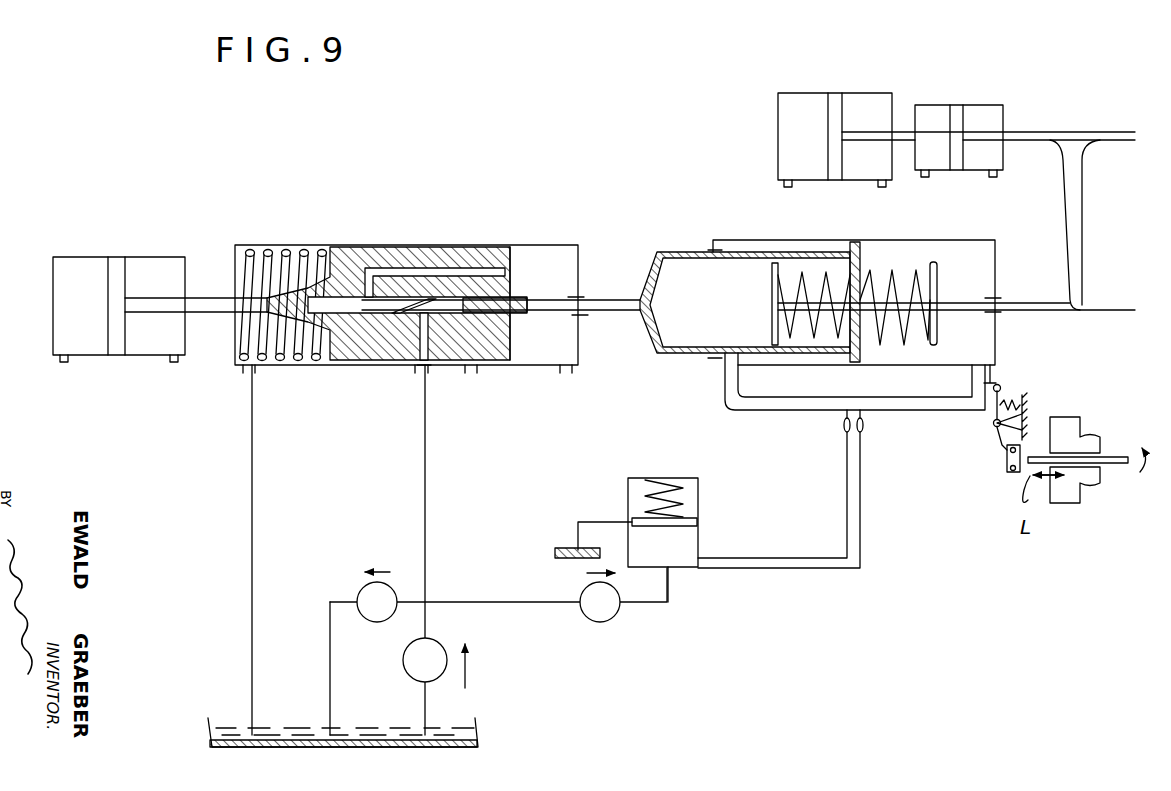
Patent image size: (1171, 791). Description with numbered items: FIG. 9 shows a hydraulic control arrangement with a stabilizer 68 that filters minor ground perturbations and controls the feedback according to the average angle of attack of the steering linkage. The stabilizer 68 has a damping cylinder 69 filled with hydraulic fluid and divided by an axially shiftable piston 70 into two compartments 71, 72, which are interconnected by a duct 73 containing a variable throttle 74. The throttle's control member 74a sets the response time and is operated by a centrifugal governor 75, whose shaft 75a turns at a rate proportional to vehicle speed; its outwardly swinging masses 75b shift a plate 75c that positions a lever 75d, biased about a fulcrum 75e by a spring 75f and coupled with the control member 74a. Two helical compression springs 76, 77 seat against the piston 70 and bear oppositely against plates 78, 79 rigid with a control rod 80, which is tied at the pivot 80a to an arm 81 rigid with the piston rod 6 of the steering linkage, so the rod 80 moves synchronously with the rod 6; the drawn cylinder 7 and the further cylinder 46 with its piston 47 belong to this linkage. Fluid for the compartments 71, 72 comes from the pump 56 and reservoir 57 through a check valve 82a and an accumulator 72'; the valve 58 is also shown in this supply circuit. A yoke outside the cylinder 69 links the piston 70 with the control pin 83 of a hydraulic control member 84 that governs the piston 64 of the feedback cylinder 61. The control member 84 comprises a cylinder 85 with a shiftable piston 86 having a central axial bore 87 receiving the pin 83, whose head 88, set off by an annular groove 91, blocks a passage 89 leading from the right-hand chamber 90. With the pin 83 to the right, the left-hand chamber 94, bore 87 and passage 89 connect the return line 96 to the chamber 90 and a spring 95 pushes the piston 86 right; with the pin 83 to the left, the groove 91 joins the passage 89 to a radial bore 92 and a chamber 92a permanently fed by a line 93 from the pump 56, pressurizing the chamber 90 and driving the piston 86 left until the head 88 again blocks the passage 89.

The piston rod 6 is at (868, 141).
The cylinder 7 is at (808, 94).
The cylinder 46 is at (1000, 105).
The piston 47 is at (960, 104).
The pump 56 is at (442, 676).
The reservoir 57 is at (208, 740).
The check valve 58 is at (366, 620).
The feedback cylinder 61 is at (139, 257).
The piston 64 is at (117, 355).
The stabilizer 68 is at (892, 460).
The damping cylinder 69 is at (744, 241).
The piston 70 is at (862, 262).
The compartment 71 is at (985, 262).
The compartment 72 is at (745, 280).
The accumulator 72' is at (650, 539).
The duct 73 is at (892, 404).
The variable throttle 74 is at (958, 460).
The control member 74a is at (1002, 388).
The centrifugal governor 75 is at (1114, 478).
The shaft 75a is at (1095, 442).
The centrifugally displaceable masses 75b is at (1084, 426).
The plate 75c is at (1010, 470).
The lever 75d is at (1004, 448).
The fulcrum 75e is at (1024, 418).
The spring 75f is at (984, 430).
The spring 76 is at (813, 332).
The spring 77 is at (898, 324).
The plate 78 is at (772, 320).
The plate 79 is at (935, 262).
The control rod 80 is at (1036, 314).
The pivot 80a is at (1117, 307).
The arm 81 is at (1083, 243).
The check valve 82a is at (598, 619).
The control pin 83 is at (599, 303).
The hydraulic control member 84 is at (544, 198).
The cylinder 85 is at (283, 249).
The piston 86 is at (350, 259).
The central axial bore 87 is at (351, 314).
The head 88 is at (380, 314).
The passage 89 is at (373, 273).
The chamber 90 is at (524, 256).
The annular groove 91 is at (425, 301).
The radial bore 92 is at (425, 332).
The chamber 92a is at (432, 372).
The line 93 is at (427, 480).
The chamber 94 is at (246, 334).
The spring 95 is at (248, 251).
The return line 96 is at (255, 466).